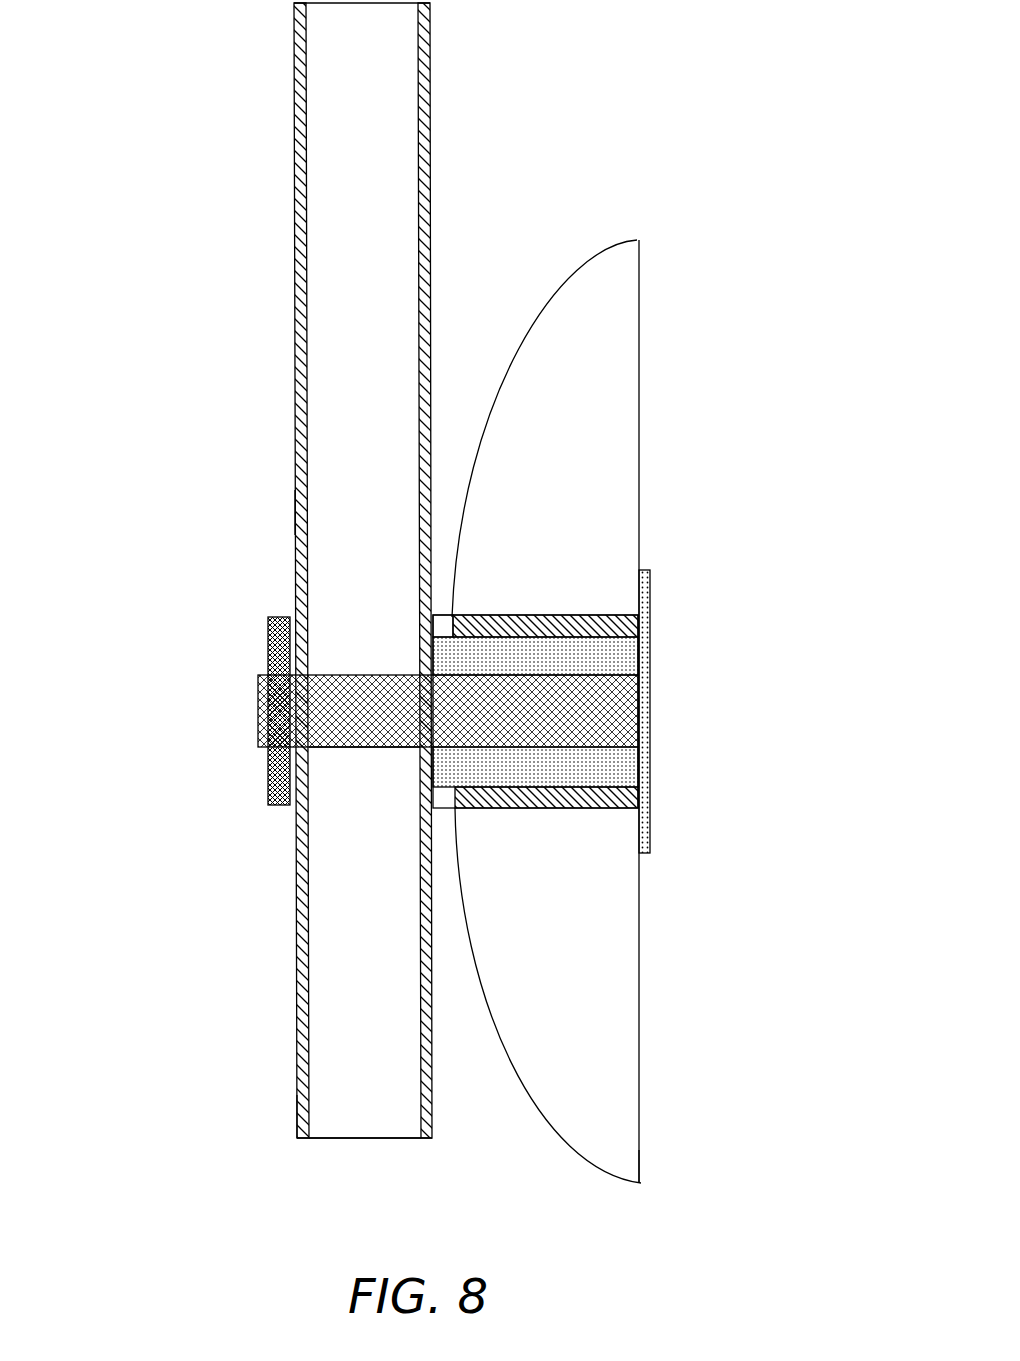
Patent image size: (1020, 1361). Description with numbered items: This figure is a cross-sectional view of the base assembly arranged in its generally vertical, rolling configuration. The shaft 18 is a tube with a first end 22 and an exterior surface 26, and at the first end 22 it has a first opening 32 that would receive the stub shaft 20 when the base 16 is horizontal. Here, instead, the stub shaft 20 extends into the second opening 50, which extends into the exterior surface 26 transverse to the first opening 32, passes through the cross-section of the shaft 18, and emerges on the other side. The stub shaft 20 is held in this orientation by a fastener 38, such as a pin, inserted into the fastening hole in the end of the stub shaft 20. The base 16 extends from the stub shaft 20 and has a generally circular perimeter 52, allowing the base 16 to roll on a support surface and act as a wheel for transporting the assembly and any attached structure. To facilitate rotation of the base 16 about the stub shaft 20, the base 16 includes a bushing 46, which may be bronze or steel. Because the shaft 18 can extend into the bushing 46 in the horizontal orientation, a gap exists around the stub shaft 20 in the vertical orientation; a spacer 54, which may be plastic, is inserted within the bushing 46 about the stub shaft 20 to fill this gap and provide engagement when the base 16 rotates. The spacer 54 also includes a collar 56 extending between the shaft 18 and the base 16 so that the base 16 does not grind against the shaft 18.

The base 16 is at (607, 293).
The shaft 18 is at (295, 147).
The stub shaft 20 is at (585, 708).
The first end 22 is at (297, 1118).
The exterior surface 26 is at (296, 512).
The first opening 32 is at (340, 1145).
The fastener 38 is at (270, 637).
The bushing 46 is at (570, 617).
The second opening 50 is at (348, 752).
The circular perimeter 52 is at (642, 1183).
The spacer 54 is at (607, 660).
The collar 56 is at (446, 617).